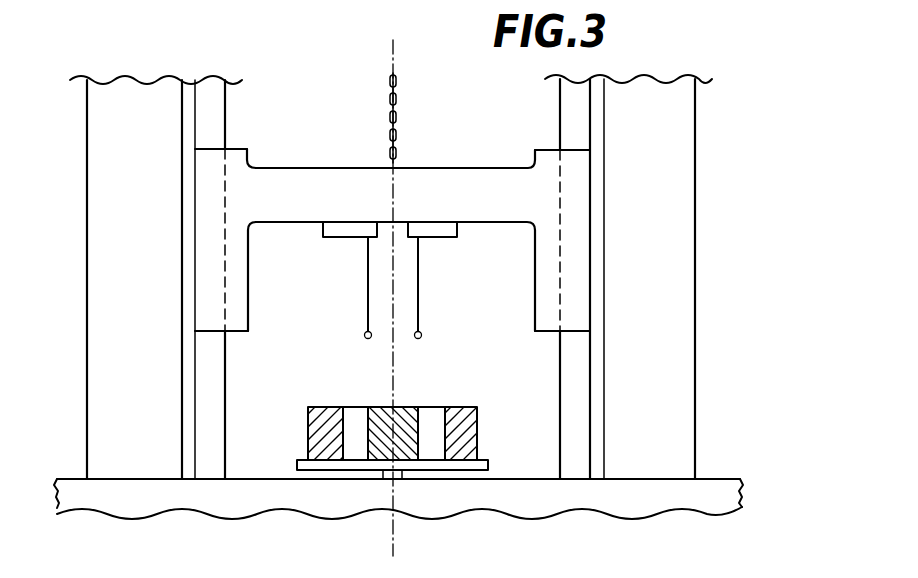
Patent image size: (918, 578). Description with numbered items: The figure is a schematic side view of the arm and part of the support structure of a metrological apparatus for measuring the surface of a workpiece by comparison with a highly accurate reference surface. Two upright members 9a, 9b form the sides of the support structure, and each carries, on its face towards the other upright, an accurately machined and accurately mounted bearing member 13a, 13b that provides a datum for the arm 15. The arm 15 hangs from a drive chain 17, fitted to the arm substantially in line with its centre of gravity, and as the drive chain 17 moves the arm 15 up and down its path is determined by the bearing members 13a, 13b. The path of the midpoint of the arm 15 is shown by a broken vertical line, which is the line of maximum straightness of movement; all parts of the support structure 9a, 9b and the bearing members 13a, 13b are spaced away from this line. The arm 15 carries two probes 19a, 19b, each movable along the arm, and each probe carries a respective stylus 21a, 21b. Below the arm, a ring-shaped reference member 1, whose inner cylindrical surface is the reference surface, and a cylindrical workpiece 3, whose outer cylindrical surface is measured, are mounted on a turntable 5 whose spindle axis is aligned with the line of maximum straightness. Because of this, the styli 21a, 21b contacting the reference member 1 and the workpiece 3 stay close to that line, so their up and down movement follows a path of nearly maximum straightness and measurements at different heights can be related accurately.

The reference member 1 is at (307, 422).
The workpiece 3 is at (368, 440).
The turntable 5 is at (433, 467).
The upright member 9a is at (102, 277).
The upright member 9b is at (673, 283).
The bearing member 13a is at (207, 113).
The bearing member 13b is at (577, 108).
The arm 15 is at (325, 187).
The drive chain 17 is at (396, 103).
The probe 19a is at (342, 232).
The probe 19b is at (443, 240).
The stylus 21a is at (365, 318).
The stylus 21b is at (422, 318).